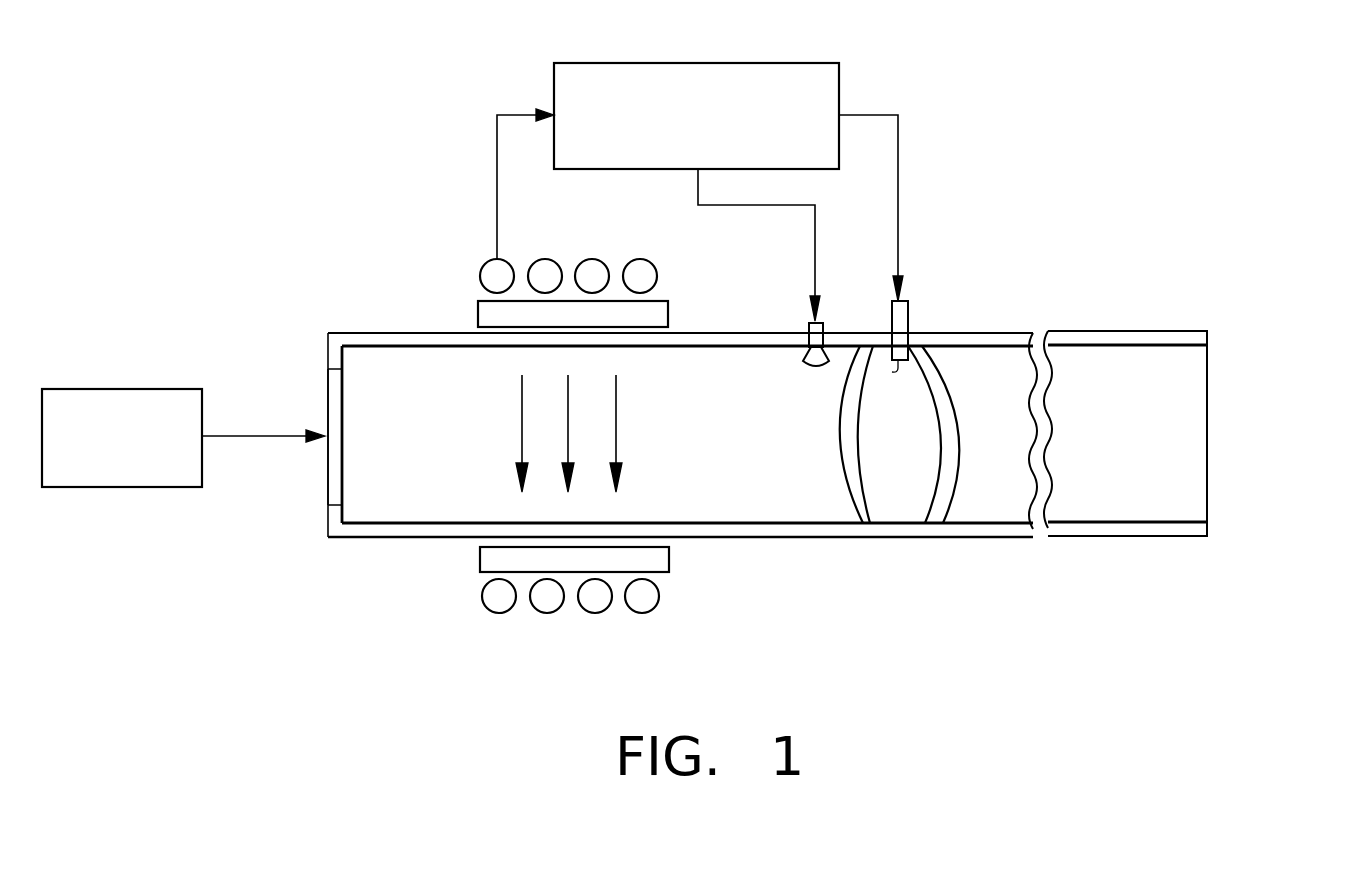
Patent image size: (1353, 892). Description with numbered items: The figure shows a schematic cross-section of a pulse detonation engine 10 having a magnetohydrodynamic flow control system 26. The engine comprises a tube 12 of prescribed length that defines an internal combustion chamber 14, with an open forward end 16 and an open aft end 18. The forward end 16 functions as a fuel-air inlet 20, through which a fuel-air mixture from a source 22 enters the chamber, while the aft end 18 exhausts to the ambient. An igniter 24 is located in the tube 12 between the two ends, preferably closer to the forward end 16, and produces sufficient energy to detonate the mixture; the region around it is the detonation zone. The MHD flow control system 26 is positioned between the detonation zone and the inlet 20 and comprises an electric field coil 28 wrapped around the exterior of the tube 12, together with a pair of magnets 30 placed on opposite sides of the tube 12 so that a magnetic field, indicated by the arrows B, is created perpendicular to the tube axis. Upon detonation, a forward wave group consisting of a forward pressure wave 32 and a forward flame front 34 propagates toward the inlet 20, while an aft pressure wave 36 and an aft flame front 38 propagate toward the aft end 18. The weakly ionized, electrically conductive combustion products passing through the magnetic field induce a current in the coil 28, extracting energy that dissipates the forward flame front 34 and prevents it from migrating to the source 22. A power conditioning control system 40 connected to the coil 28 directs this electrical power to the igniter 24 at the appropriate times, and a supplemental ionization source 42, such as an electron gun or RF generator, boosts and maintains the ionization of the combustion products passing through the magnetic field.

The pulse detonation engine 10 is at (1230, 307).
The tube 12 is at (804, 532).
The combustion chamber 14 is at (358, 418).
The open forward end 16 is at (328, 345).
The open aft end 18 is at (1207, 470).
The fuel-air inlet 20 is at (328, 500).
The fuel-air source 22 is at (105, 389).
The igniter 24 is at (908, 318).
The magnetohydrodynamic flow control system 26 is at (575, 633).
The electric field coil 28 is at (640, 259).
The magnets 30 is at (668, 313).
The forward pressure wave 32 is at (840, 448).
The forward flame front 34 is at (862, 455).
The aft pressure wave 36 is at (953, 497).
The aft flame front 38 is at (943, 440).
The power conditioning control system 40 is at (586, 63).
The supplemental ionization source 42 is at (810, 338).
The magnetic field arrows B is at (520, 395).